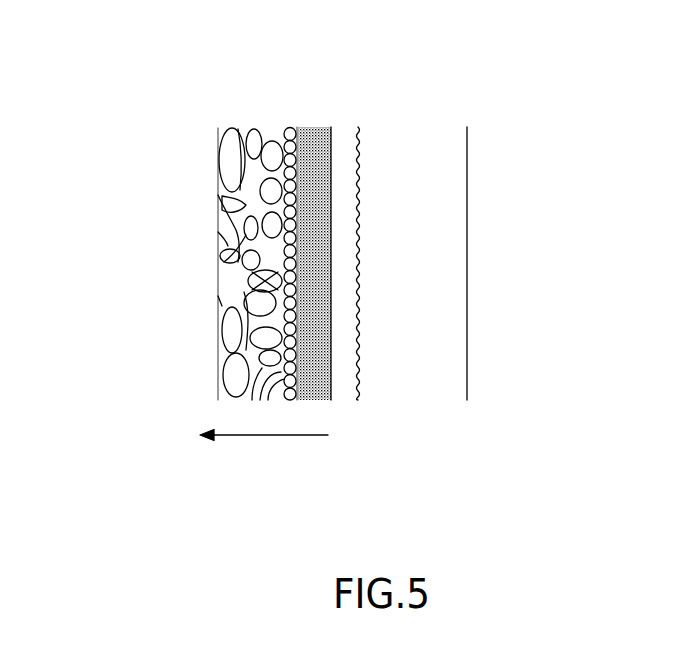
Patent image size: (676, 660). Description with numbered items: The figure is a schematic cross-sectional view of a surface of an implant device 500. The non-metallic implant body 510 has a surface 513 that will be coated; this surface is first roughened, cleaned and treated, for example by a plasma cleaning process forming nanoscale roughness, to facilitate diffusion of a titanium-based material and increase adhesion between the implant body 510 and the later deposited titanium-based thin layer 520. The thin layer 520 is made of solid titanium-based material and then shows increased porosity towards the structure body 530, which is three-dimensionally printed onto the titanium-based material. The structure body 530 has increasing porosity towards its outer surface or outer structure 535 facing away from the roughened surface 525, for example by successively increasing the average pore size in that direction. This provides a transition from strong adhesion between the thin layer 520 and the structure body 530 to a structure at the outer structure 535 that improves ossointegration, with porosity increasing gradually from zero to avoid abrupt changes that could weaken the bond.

The implant device 500 is at (204, 104).
The implant body 510 is at (423, 414).
The surface 513 is at (358, 227).
The titanium-based thin layer 520 is at (346, 414).
The roughened surface 525 is at (331, 181).
The structure body 530 is at (266, 412).
The outer surface 535 is at (240, 222).